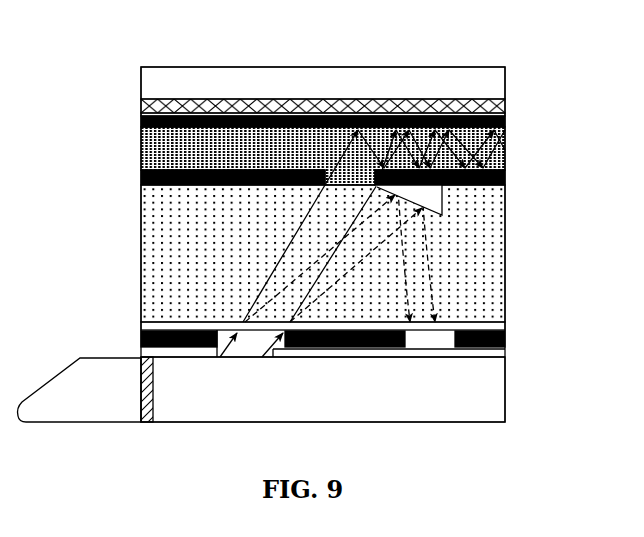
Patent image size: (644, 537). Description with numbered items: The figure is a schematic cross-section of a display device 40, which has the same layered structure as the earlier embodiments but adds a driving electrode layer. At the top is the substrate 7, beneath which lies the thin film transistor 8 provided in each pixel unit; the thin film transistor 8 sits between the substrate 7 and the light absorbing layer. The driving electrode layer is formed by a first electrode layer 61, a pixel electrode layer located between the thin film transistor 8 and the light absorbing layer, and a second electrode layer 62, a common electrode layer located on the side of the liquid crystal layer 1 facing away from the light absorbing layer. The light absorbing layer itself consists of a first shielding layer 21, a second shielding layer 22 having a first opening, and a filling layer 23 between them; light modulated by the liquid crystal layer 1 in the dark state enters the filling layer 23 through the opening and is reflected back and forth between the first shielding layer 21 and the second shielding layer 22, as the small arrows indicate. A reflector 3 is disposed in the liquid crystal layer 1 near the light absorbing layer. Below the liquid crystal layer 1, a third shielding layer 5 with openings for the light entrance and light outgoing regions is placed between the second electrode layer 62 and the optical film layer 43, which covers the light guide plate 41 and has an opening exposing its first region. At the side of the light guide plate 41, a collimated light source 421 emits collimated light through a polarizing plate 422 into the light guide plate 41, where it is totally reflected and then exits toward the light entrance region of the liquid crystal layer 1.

The display device 40 is at (557, 29).
The substrate 7 is at (505, 82).
The thin film transistor 8 is at (141, 105).
The first electrode layer 61 is at (505, 112).
The first shielding layer 21 is at (141, 123).
The filling layer 23 is at (505, 147).
The second shielding layer 22 is at (141, 177).
The liquid crystal layer 1 is at (141, 233).
The reflector 3 is at (443, 203).
The second electrode layer 62 is at (505, 325).
The third shielding layer 5 is at (141, 338).
The optical film layer 43 is at (505, 352).
The light guide plate 41 is at (505, 387).
The collimated light source 421 is at (98, 357).
The polarizing plate 422 is at (146, 422).